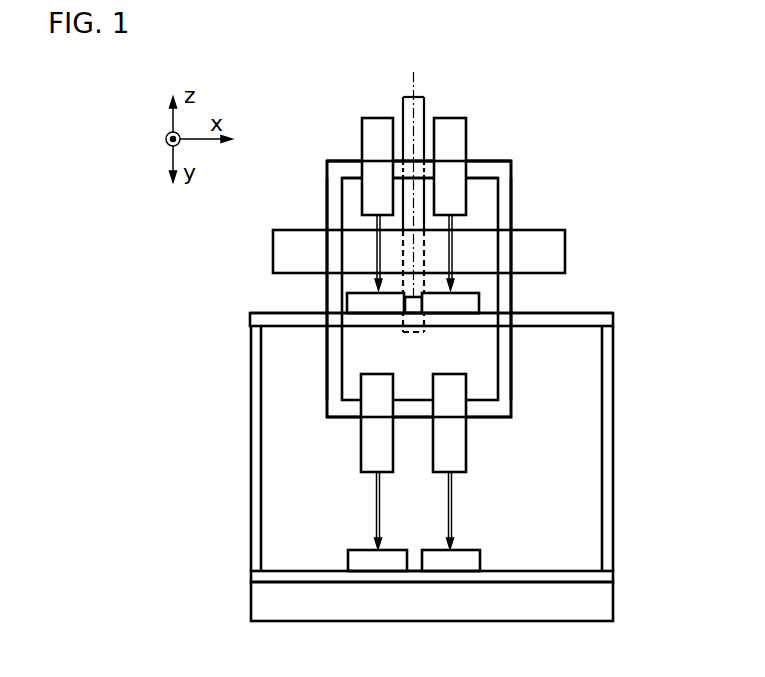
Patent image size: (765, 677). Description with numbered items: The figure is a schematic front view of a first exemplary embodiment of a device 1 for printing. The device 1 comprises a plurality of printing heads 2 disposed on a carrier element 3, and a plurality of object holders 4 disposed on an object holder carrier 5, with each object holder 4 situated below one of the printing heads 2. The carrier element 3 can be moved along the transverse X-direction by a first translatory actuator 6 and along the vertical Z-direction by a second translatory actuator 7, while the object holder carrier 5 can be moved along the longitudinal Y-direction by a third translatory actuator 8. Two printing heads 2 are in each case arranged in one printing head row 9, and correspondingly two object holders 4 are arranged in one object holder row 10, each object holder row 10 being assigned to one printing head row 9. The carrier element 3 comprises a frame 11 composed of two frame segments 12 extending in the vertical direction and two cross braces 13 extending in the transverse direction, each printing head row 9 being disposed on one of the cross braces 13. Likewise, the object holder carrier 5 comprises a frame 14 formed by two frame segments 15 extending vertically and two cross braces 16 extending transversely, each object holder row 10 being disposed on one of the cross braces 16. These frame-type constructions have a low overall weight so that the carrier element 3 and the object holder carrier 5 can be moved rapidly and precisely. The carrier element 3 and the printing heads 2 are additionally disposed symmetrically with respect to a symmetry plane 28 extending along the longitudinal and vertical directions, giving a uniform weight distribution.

The device 1 is at (578, 128).
The printing head 2 is at (373, 118).
The carrier element 3 is at (512, 207).
The object holder 4 is at (360, 302).
The object holder carrier 5 is at (590, 313).
The first translatory actuator 6 is at (565, 252).
The second translatory actuator 7 is at (407, 95).
The third translatory actuator 8 is at (612, 603).
The printing head row 9 is at (353, 132).
The object holder row 10 is at (488, 305).
The frame 11 is at (512, 183).
The frame segment 12 is at (327, 379).
The cross brace 13 is at (492, 160).
The frame 14 is at (443, 450).
The frame segment 15 is at (252, 502).
The cross brace 16 is at (613, 313).
The symmetry plane 28 is at (417, 77).